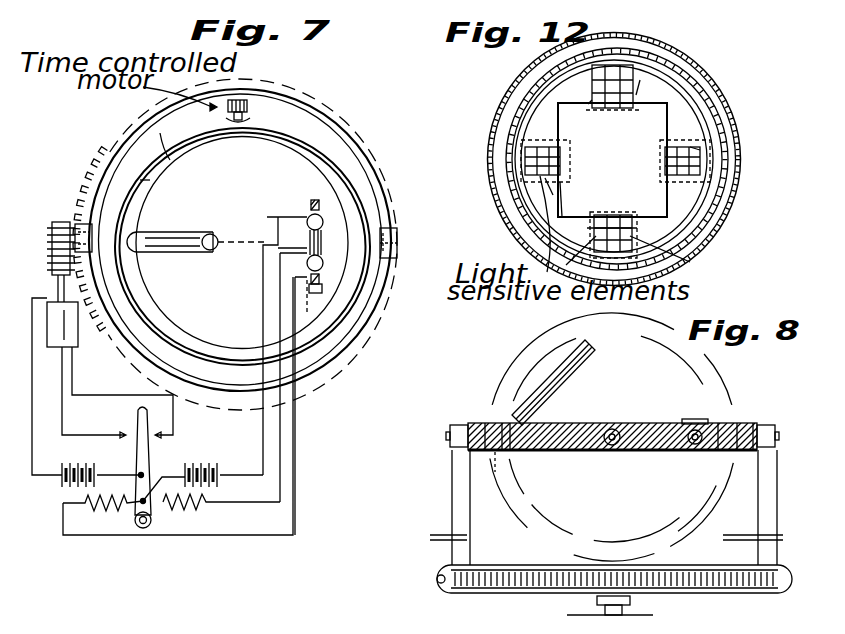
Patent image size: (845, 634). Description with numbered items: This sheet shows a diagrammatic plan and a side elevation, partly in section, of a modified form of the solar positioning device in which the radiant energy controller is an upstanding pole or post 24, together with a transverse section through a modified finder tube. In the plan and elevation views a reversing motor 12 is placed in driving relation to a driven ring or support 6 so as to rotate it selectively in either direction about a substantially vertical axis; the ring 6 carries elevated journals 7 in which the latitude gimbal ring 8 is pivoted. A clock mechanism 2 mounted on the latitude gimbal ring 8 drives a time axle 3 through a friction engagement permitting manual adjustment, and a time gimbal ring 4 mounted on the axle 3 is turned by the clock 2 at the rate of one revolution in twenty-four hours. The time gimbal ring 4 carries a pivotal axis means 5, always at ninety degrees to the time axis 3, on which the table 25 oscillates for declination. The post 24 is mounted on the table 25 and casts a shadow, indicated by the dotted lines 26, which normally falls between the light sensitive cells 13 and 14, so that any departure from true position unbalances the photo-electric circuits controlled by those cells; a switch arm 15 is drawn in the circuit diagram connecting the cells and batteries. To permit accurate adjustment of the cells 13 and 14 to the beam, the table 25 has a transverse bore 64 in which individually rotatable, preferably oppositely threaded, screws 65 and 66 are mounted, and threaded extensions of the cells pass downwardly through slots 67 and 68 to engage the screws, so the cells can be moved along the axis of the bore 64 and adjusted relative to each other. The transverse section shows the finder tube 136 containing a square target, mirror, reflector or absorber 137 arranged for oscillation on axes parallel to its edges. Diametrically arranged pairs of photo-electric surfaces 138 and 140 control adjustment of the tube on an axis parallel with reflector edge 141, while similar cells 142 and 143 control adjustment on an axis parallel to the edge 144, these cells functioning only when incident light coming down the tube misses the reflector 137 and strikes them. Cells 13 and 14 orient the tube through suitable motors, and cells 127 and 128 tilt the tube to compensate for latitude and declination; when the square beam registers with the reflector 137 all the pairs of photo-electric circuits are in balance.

In FIG. 7, the clock mechanism 2 is at (248, 100).
In FIG. 8, the clock mechanism 2 is at (626, 452).
In FIG. 7, the time axle 3 is at (255, 118).
In FIG. 8, the time axle 3 is at (624, 452).
In FIG. 7, the time gimbal ring 4 is at (150, 180).
In FIG. 8, the time gimbal ring 4 is at (508, 422).
In FIG. 7, the pivotal axis means 5 is at (390, 258).
In FIG. 8, the pivotal axis means 5 is at (527, 452).
In FIG. 7, the driven ring 6 is at (343, 137).
In FIG. 8, the driven ring 6 is at (515, 562).
In FIG. 7, the journals 7 is at (78, 213).
In FIG. 8, the journals 7 is at (463, 482).
In FIG. 7, the latitude gimbal ring 8 is at (176, 156).
In FIG. 8, the latitude gimbal ring 8 is at (489, 422).
In FIG. 7, the reversing motor 12 is at (66, 338).
In FIG. 7, the light sensitive device 13 is at (270, 365).
In FIG. 12, the light sensitive device 13 is at (640, 80).
In FIG. 8, the light sensitive device 13 is at (692, 418).
In FIG. 7, the light sensitive device 14 is at (307, 266).
In FIG. 12, the light sensitive device 14 is at (640, 250).
In FIG. 7, the switch arm 15 is at (140, 460).
In FIG. 7, the post 24 is at (152, 234).
In FIG. 8, the post 24 is at (560, 364).
In FIG. 7, the table 25 is at (242, 243).
In FIG. 8, the table 25 is at (557, 430).
In FIG. 7, the shadow 26 is at (224, 252).
In FIG. 7, the transverse bore 64 is at (342, 180).
In FIG. 8, the transverse bore 64 is at (667, 490).
In FIG. 7, the screw 65 is at (319, 207).
In FIG. 7, the screw 66 is at (350, 245).
In FIG. 8, the screw 66 is at (665, 514).
In FIG. 7, the slot 67 is at (311, 206).
In FIG. 7, the slot 68 is at (310, 277).
In FIG. 8, the slot 68 is at (688, 422).
In FIG. 12, the cell 127 is at (553, 195).
In FIG. 12, the cell 128 is at (690, 147).
In FIG. 12, the tube 136 is at (727, 190).
In FIG. 12, the reflector 137 is at (612, 160).
In FIG. 12, the light sensitive surface 138 is at (550, 141).
In FIG. 12, the light sensitive surface 140 is at (675, 147).
In FIG. 12, the reflector edge 141 is at (562, 217).
In FIG. 12, the cell 142 is at (633, 92).
In FIG. 12, the cell 143 is at (634, 229).
In FIG. 12, the reflector edge 144 is at (588, 104).